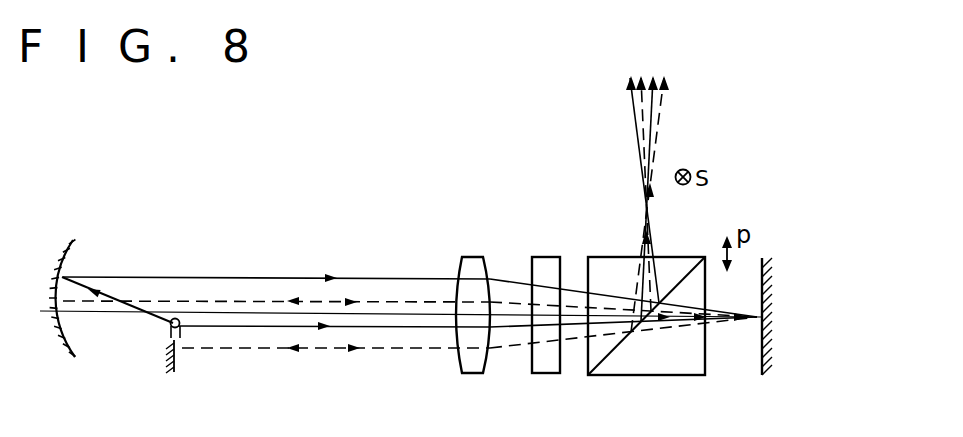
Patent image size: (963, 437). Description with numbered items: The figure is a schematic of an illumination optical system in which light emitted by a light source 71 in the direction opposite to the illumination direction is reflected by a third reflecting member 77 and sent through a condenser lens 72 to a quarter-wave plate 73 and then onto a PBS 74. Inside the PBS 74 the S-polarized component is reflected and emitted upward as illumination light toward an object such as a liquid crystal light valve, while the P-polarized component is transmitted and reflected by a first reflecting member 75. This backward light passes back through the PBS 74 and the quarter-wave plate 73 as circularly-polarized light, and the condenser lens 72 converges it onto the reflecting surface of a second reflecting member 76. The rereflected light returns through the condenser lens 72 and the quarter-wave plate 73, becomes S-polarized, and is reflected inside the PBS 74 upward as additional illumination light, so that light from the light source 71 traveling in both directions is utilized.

The light source 71 is at (167, 330).
The condenser lens 72 is at (470, 374).
The quarter-wave plate 73 is at (540, 374).
The PBS 74 is at (632, 376).
The first reflecting member 75 is at (760, 365).
The second reflecting member 76 is at (177, 365).
The third reflecting member 77 is at (73, 247).